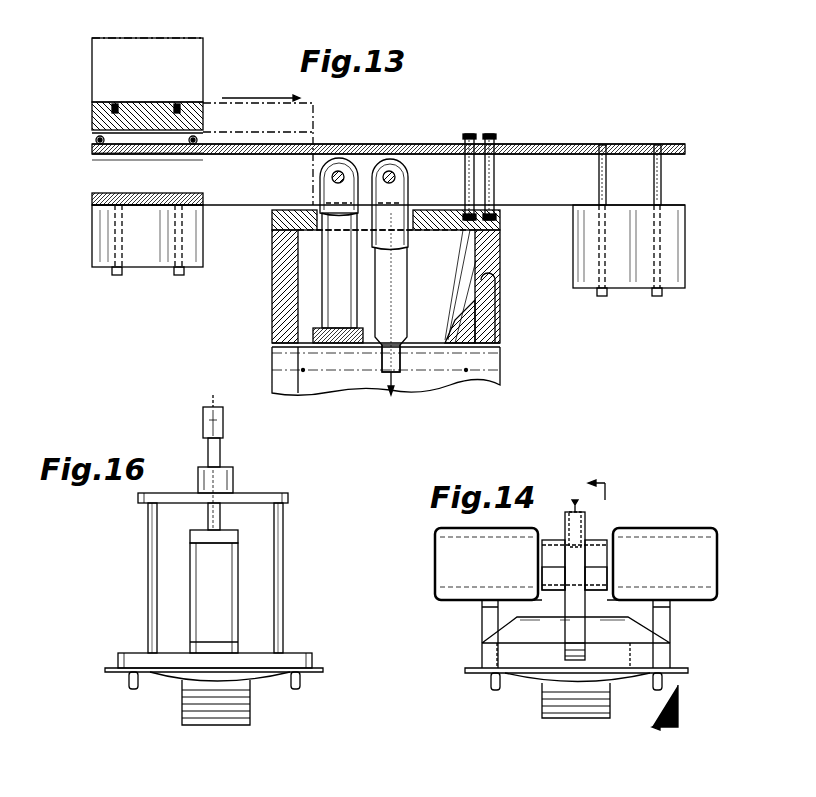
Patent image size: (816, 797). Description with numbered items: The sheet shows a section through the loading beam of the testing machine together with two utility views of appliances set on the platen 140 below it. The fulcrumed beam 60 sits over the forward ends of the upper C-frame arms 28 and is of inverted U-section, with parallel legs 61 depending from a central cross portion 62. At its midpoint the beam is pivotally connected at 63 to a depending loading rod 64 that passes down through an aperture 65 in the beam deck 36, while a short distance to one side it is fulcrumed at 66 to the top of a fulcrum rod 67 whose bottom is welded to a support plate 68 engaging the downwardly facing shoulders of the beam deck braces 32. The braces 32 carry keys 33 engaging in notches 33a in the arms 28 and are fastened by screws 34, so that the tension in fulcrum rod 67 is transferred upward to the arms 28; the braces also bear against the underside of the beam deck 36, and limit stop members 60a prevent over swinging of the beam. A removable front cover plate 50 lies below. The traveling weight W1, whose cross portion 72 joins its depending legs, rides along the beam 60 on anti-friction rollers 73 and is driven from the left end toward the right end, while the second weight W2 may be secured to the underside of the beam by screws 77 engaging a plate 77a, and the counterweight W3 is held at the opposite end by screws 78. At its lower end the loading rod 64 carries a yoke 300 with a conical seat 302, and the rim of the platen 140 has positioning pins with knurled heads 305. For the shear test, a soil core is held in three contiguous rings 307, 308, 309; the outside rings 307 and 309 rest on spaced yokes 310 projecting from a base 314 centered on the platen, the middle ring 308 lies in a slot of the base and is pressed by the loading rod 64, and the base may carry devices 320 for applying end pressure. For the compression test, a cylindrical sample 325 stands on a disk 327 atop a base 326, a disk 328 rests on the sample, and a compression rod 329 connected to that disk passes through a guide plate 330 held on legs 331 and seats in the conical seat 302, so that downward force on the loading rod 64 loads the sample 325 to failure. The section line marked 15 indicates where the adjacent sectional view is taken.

In FIG. 13, the traveling weight W1 is at (203, 103).
In FIG. 13, the second weight W2 is at (203, 68).
In FIG. 13, the counterweight W3 is at (685, 235).
In FIG. 13, the upper C-frame arms 28 is at (272, 254).
In FIG. 13, the beam deck braces 32 is at (504, 286).
In FIG. 13, the keys 33 is at (500, 320).
In FIG. 13, the notches 33a is at (500, 306).
In FIG. 13, the screws 34 is at (483, 343).
In FIG. 13, the beam deck 36 is at (440, 230).
In FIG. 13, the front cover plate 50 is at (440, 392).
In FIG. 13, the fulcrumed beam 60 is at (533, 144).
In FIG. 13, the limit stop members 60a is at (490, 134).
In FIG. 13, the beam legs 61 is at (237, 204).
In FIG. 13, the beam cross portion 62 is at (160, 155).
In FIG. 13, the pivotal connection 63 is at (395, 144).
In FIG. 13, the loading rod 64 is at (407, 303).
In FIG. 16, the loading rod 64 is at (223, 412).
In FIG. 14, the loading rod 64 is at (585, 515).
In FIG. 13, the aperture 65 is at (412, 208).
In FIG. 13, the fulcrum 66 is at (340, 170).
In FIG. 13, the fulcrum rod 67 is at (330, 270).
In FIG. 13, the support plate 68 is at (350, 343).
In FIG. 13, the cross portion of weight W1 72 is at (145, 105).
In FIG. 13, the anti-friction rollers 73 is at (96, 140).
In FIG. 13, the screws 77 is at (120, 195).
In FIG. 13, the plate 77a is at (130, 205).
In FIG. 13, the screws 78 is at (661, 178).
In FIG. 16, the platen 140 is at (325, 672).
In FIG. 14, the platen 140 is at (690, 668).
In FIG. 13, the yoke 300 is at (401, 360).
In FIG. 16, the yoke 300 is at (223, 436).
In FIG. 14, the yoke 300 is at (570, 522).
In FIG. 16, the conical seat 302 is at (214, 398).
In FIG. 16, the knurled heads 305 is at (133, 690).
In FIG. 14, the knurled heads 305 is at (494, 690).
In FIG. 14, the outside soil ring 307 is at (550, 540).
In FIG. 14, the middle soil ring 308 is at (596, 545).
In FIG. 14, the outside soil ring 309 is at (600, 555).
In FIG. 14, the yokes 310 is at (552, 575).
In FIG. 14, the base 314 is at (672, 640).
In FIG. 14, the end pressure devices 320 is at (490, 530).
In FIG. 16, the cylindrical material sample 325 is at (230, 583).
In FIG. 16, the base 326 is at (305, 655).
In FIG. 16, the disk 327 is at (233, 645).
In FIG. 16, the disk 328 is at (220, 532).
In FIG. 16, the compression rod 329 is at (222, 512).
In FIG. 16, the guide plate 330 is at (158, 496).
In FIG. 16, the legs 331 is at (283, 536).
In FIG. 14, the section line 15 is at (631, 609).